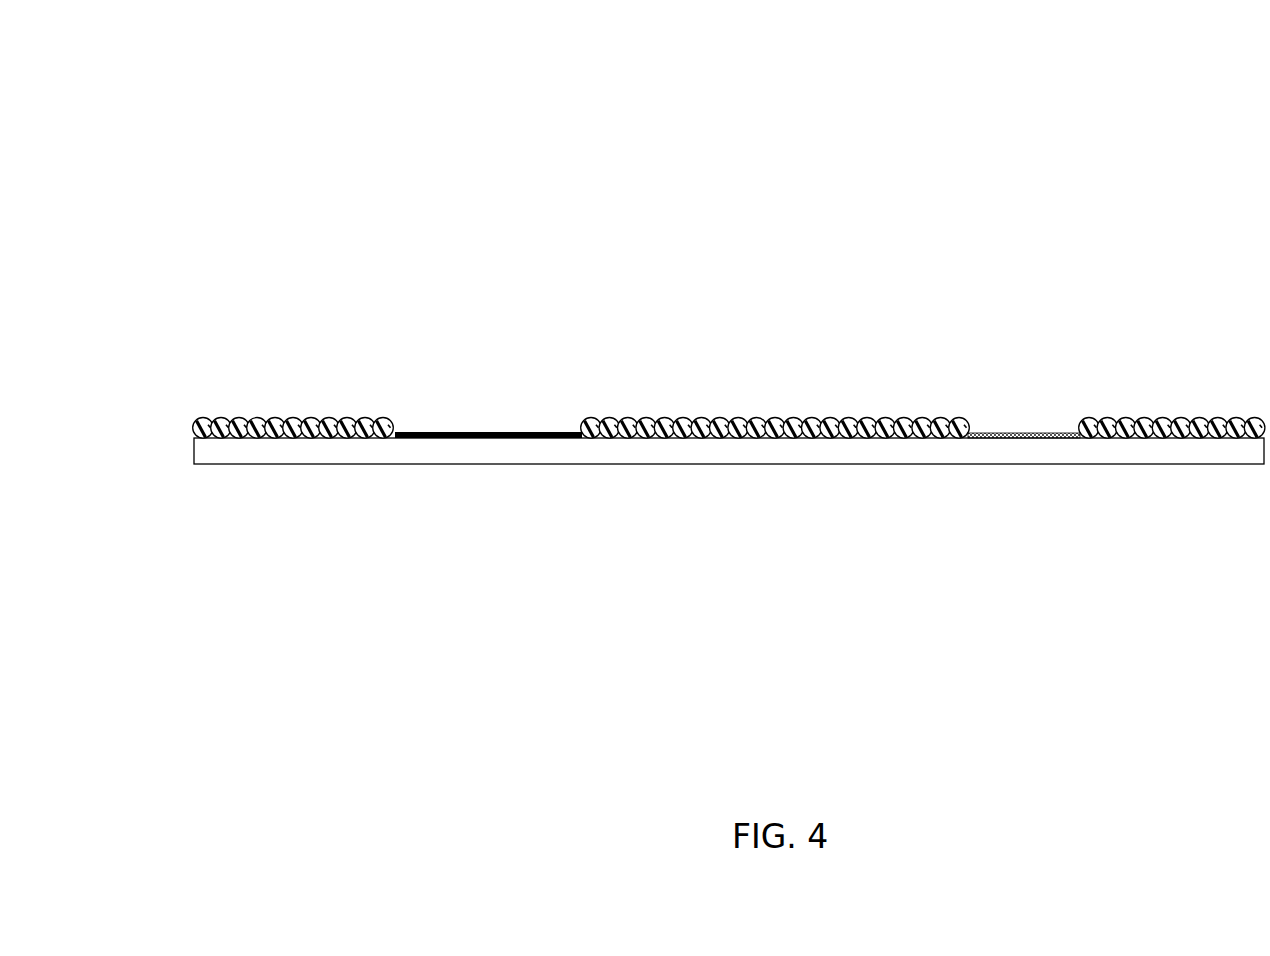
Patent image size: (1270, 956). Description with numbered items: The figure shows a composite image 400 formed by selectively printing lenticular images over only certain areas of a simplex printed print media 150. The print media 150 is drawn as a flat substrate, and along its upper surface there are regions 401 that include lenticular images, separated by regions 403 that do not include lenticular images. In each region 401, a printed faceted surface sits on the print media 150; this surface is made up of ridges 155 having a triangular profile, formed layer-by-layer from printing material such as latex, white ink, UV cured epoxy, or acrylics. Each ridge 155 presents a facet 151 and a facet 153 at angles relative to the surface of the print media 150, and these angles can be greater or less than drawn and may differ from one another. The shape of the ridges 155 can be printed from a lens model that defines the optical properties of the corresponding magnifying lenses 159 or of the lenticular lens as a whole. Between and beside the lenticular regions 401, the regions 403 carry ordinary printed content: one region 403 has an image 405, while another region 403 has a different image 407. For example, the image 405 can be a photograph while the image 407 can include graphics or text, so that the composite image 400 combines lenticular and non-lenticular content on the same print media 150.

The composite image 400 is at (201, 84).
The print media 150 is at (194, 452).
The facet 151 is at (377, 427).
The facet 153 is at (597, 425).
The ridge 155 is at (267, 433).
The magnifying lens 159 is at (257, 418).
The region 401 is at (397, 311).
The region 403 is at (582, 361).
The image 405 is at (483, 440).
The image 407 is at (1028, 440).